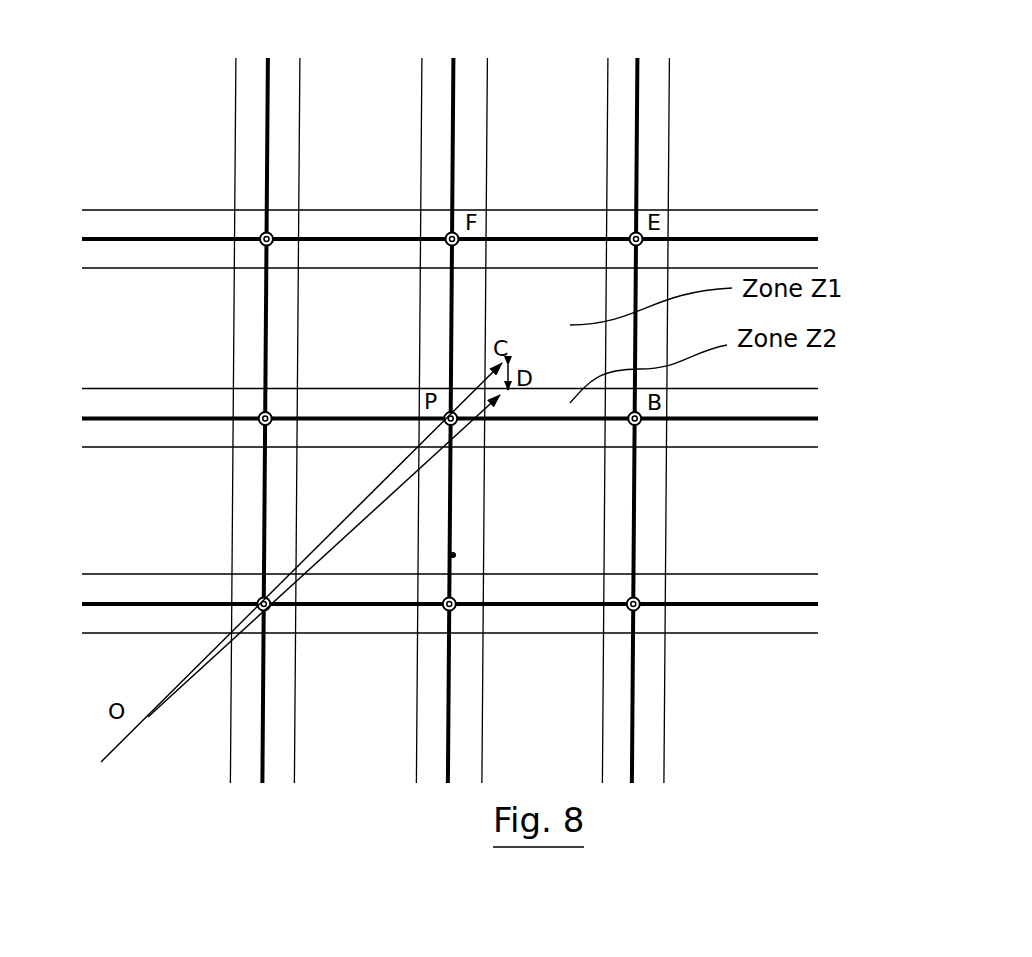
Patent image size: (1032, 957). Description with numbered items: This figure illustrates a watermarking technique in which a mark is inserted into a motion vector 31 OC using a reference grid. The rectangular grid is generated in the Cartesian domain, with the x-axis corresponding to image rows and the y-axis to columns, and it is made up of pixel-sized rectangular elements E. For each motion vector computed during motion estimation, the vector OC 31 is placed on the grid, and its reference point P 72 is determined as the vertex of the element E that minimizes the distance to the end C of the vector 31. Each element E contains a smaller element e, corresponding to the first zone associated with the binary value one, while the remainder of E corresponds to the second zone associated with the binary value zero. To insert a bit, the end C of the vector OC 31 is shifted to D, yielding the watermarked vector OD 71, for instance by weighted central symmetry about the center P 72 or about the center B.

The motion vector OC 31 is at (340, 562).
The watermarked vector OD 71 is at (328, 553).
The reference point P 72 is at (450, 428).